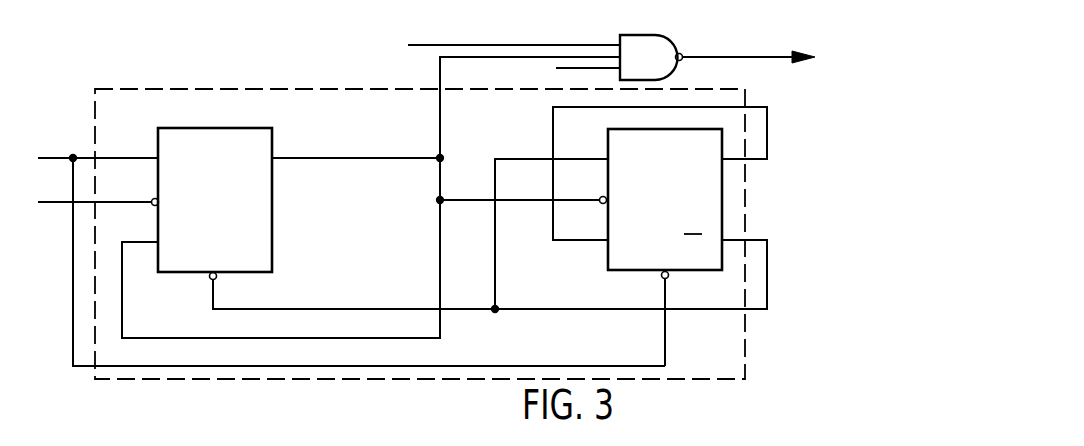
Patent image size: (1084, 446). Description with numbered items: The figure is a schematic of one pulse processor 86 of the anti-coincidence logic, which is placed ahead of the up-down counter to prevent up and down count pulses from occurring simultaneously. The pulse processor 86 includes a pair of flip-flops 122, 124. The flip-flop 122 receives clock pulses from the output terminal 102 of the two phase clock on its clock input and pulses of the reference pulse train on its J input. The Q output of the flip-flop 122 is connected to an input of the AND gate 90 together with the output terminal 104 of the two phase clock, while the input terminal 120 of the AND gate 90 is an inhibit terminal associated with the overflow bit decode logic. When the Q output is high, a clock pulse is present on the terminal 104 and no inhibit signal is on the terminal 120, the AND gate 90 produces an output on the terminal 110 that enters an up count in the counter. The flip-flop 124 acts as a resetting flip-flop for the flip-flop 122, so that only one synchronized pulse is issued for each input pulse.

The pulse processor 86 is at (745, 89).
The AND gate 90 is at (654, 70).
The output terminal of the two phase clock 102 is at (54, 204).
The output terminal of the two phase clock 104 is at (468, 44).
The output terminal of the AND gate 110 is at (772, 55).
The inhibit terminal of the AND gate 120 is at (556, 68).
The flip-flop 122 is at (272, 197).
The flip-flop 124 is at (722, 193).